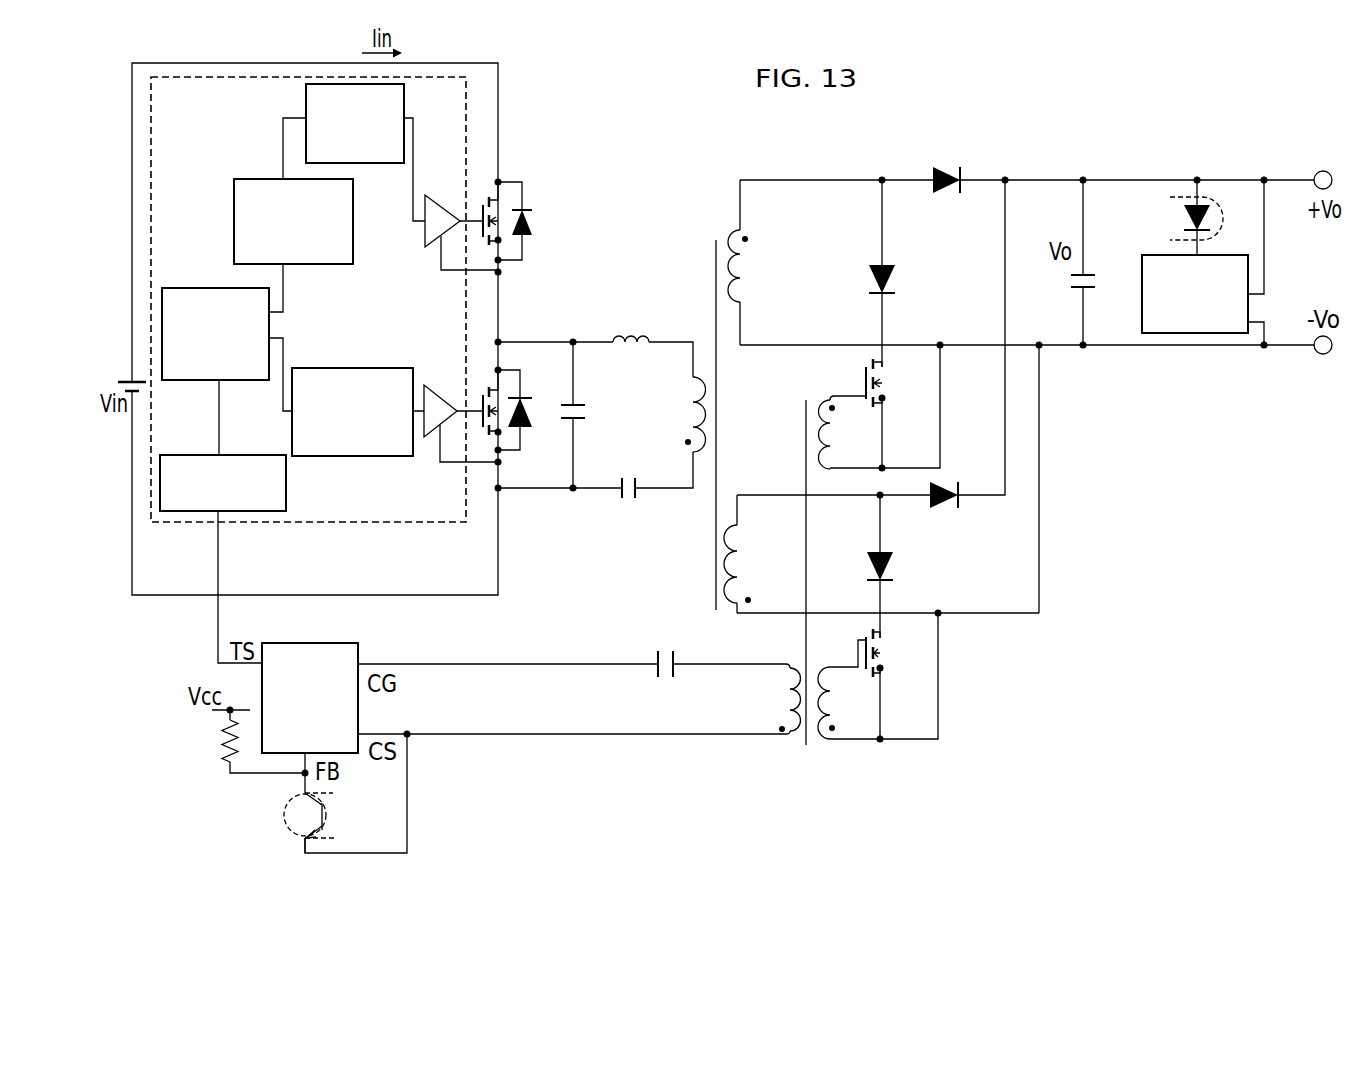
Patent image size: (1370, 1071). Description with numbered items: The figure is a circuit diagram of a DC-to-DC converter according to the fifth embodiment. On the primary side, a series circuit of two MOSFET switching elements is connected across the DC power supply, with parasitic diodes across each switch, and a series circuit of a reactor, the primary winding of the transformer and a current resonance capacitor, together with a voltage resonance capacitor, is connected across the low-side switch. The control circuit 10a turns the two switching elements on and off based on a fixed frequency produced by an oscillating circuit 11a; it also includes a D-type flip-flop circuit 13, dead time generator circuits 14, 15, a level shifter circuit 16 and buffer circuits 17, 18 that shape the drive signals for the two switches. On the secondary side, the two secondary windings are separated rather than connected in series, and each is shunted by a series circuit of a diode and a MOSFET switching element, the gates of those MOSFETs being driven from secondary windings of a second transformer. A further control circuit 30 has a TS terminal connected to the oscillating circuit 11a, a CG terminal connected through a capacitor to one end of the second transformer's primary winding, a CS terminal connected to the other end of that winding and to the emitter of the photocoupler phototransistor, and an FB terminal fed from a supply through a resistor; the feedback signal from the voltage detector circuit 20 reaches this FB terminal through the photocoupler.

The control circuit 10a is at (400, 522).
The oscillating circuit 11a is at (184, 455).
The D-type flip-flop circuit 13 is at (176, 288).
The dead time generator circuit 14 is at (345, 368).
The dead time generator circuit 15 is at (234, 200).
The level shifter circuit 16 is at (376, 163).
The buffer circuit 17 is at (436, 394).
The buffer circuit 18 is at (425, 243).
The voltage detector circuit 20 is at (1142, 255).
The control circuit 30 is at (358, 646).